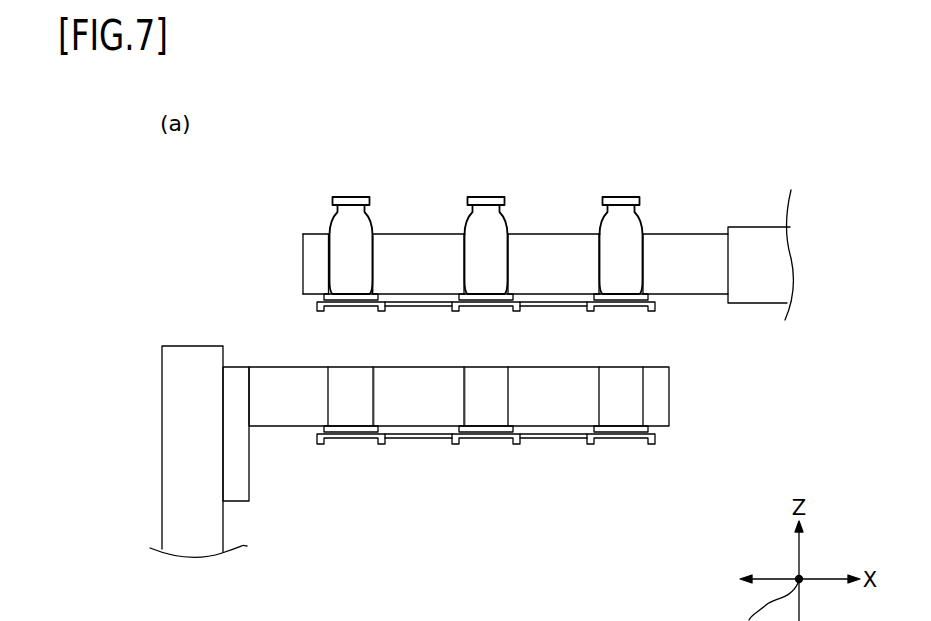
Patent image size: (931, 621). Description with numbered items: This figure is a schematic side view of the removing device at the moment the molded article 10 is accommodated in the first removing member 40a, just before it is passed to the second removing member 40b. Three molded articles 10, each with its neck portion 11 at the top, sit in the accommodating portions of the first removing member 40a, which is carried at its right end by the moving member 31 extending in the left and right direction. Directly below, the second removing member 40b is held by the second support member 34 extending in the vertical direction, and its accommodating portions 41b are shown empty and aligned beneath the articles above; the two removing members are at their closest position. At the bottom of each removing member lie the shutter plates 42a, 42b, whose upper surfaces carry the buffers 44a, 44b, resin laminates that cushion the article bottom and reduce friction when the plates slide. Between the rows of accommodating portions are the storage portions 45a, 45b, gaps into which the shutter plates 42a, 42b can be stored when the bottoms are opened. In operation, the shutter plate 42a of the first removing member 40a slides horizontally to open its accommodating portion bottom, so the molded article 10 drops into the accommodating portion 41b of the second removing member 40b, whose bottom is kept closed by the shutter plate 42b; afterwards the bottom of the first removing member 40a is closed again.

The molded article 10 is at (613, 228).
The neck portion 11 is at (623, 201).
The moving member 31 is at (757, 232).
The second support member 34 is at (192, 356).
The first removing member 40a is at (515, 250).
The second removing member 40b is at (507, 410).
The accommodating portion 41b is at (484, 384).
The shutter plate 42a is at (610, 301).
The shutter plate 42b is at (611, 434).
The buffer 44a is at (637, 308).
The buffer 44b is at (638, 441).
The storage portion 45a is at (374, 229).
The storage portion 45b is at (374, 362).